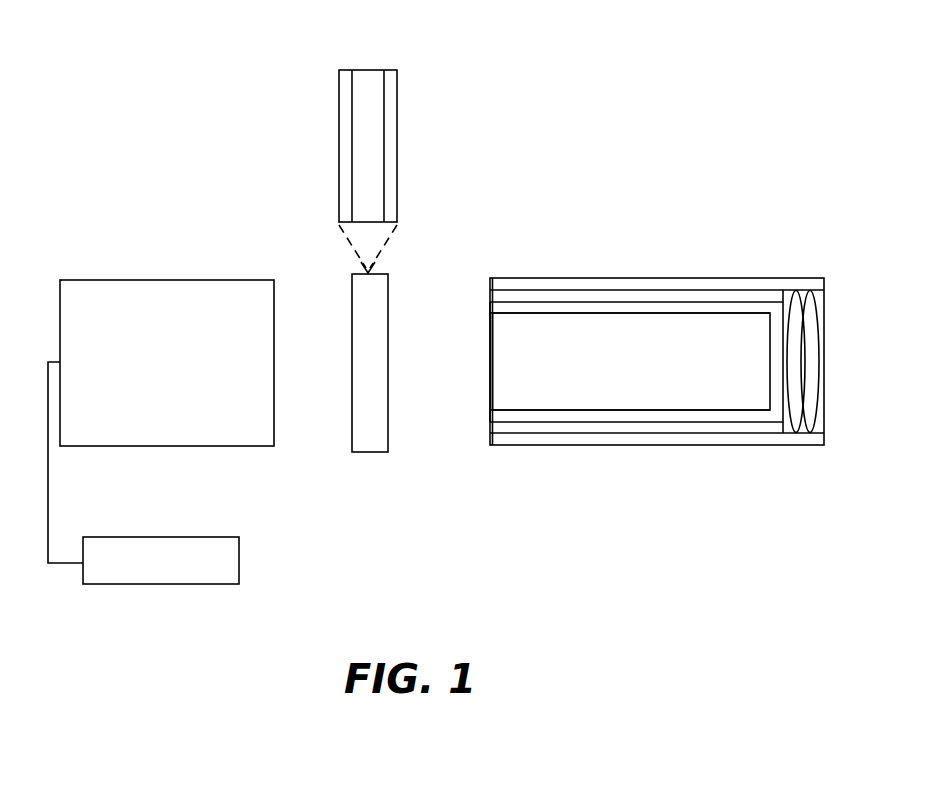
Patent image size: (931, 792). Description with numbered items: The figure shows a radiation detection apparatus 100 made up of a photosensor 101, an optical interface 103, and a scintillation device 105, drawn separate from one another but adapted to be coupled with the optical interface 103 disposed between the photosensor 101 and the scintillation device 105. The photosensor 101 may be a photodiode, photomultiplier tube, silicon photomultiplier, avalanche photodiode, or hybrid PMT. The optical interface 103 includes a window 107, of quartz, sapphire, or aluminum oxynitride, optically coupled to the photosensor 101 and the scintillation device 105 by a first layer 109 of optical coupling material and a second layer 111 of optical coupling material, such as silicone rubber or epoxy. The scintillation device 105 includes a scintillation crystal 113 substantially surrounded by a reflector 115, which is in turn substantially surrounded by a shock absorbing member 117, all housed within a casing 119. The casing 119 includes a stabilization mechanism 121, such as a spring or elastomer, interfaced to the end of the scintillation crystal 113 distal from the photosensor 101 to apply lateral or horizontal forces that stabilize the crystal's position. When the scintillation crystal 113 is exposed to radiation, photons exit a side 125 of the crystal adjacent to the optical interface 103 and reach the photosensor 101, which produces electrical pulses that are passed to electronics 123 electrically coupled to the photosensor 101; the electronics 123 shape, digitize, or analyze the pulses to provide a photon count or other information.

The radiation detection apparatus 100 is at (131, 196).
The photosensor 101 is at (167, 363).
The optical interface 103 is at (370, 452).
The scintillation device 105 is at (670, 374).
The window 107 is at (368, 70).
The first layer of optical coupling material 109 is at (339, 145).
The second layer of optical coupling material 111 is at (397, 167).
The scintillation crystal 113 is at (632, 361).
The reflector 115 is at (692, 308).
The shock absorbing member 117 is at (620, 297).
The casing 119 is at (563, 278).
The stabilization mechanism 121 is at (803, 295).
The electronics 123 is at (160, 537).
The side of the scintillation crystal 125 is at (480, 350).